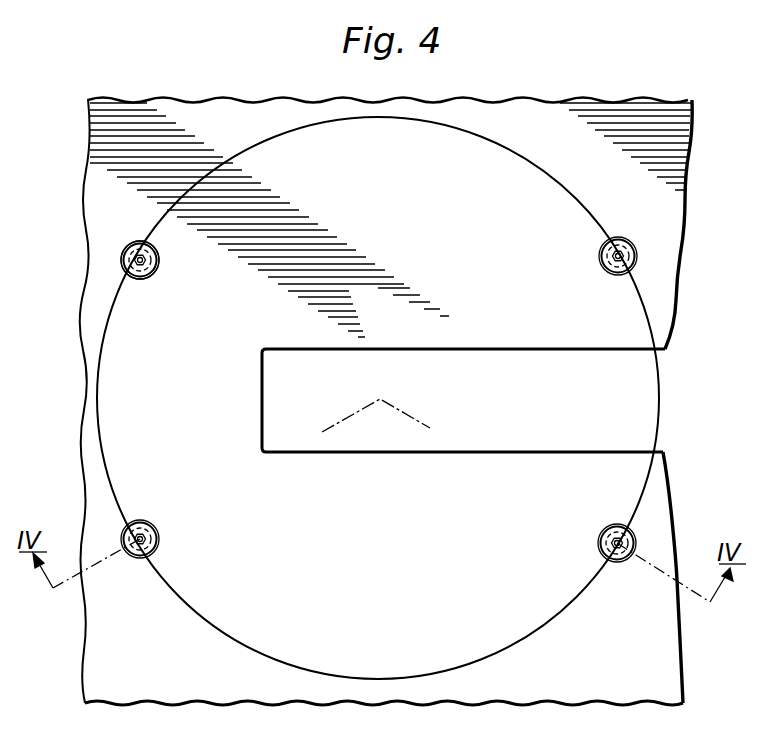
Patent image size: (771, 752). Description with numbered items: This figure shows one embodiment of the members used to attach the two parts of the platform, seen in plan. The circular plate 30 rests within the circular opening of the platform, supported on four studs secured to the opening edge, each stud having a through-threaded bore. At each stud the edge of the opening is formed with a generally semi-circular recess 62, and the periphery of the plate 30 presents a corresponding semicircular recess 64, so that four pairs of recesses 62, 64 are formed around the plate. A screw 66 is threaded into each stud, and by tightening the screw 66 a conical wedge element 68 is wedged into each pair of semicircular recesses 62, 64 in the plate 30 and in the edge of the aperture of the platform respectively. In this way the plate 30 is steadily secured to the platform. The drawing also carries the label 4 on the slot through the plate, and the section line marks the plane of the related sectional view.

The slot 4 is at (548, 451).
The plate 30 is at (543, 190).
The semi-circular recesses 62 is at (123, 253).
The semicircular recesses 64 is at (158, 272).
The screw 66 is at (603, 536).
The conical wedge elements 68 is at (158, 539).